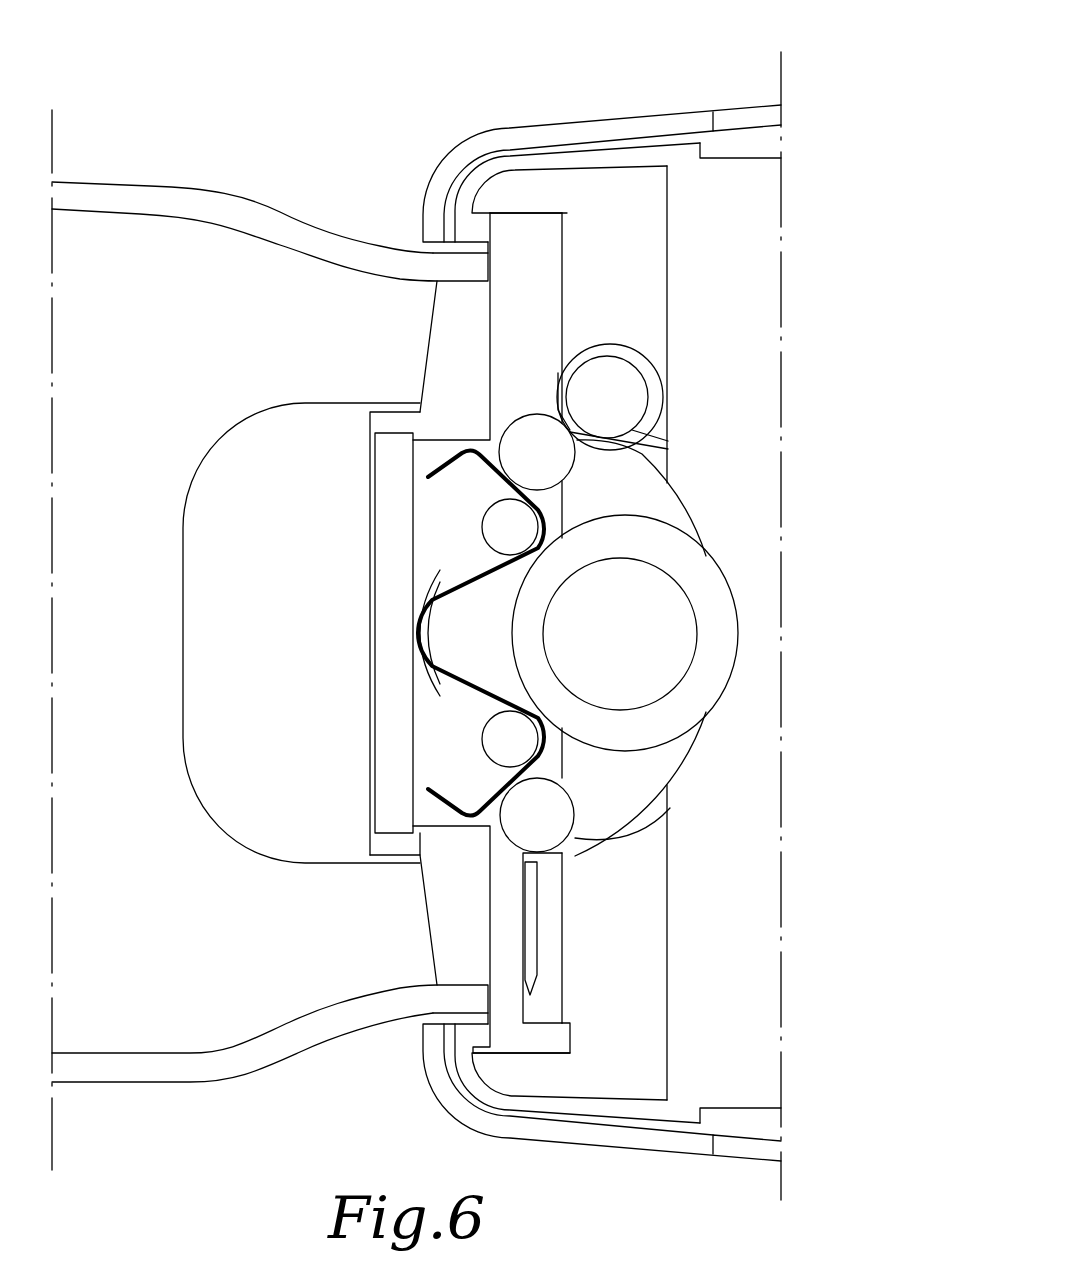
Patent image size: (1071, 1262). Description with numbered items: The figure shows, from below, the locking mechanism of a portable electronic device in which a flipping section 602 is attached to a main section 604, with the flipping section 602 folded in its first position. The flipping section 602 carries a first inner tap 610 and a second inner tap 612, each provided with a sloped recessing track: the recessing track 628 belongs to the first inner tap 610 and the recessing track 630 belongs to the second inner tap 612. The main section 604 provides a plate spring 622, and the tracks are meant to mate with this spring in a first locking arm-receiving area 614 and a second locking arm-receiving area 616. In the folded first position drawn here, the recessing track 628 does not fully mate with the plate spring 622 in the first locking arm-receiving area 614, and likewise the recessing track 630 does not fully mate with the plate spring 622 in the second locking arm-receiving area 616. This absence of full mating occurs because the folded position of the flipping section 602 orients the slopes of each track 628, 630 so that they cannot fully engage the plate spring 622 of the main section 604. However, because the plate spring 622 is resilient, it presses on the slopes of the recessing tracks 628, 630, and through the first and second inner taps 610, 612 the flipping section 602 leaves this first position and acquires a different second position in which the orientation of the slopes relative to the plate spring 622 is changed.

The flipping section 602 is at (236, 186).
The main section 604 is at (592, 111).
The first inner tap 610 is at (437, 449).
The second inner tap 612 is at (430, 822).
The first locking arm-receiving area 614 is at (515, 331).
The second locking arm-receiving area 616 is at (517, 933).
The plate spring 622 is at (412, 641).
The recessing track 628 is at (487, 440).
The recessing track 630 is at (480, 830).